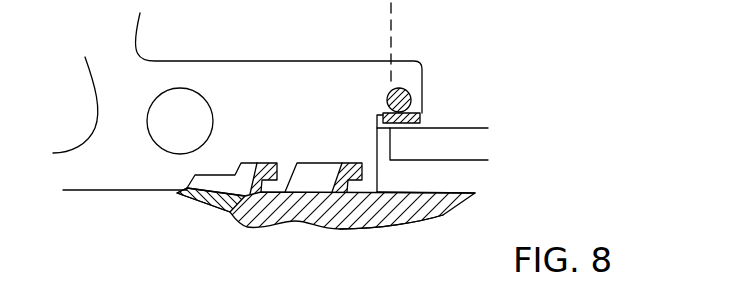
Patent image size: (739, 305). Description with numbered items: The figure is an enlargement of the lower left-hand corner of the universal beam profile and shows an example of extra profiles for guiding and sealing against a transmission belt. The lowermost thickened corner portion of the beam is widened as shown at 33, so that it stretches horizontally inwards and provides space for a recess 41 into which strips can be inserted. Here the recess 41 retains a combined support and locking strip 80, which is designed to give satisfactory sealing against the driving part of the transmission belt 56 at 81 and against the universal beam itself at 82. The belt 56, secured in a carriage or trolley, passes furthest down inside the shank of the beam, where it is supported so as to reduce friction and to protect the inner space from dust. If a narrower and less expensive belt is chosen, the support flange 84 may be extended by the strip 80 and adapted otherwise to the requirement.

The widened corner portion 33 is at (307, 73).
The recess 41 is at (312, 172).
The transmission belt 56 is at (432, 153).
The combined support and locking strip 80 is at (332, 225).
The sealing location against the belt 81 is at (450, 190).
The sealing location against the universal beam 82 is at (183, 194).
The support flange 84 is at (400, 220).